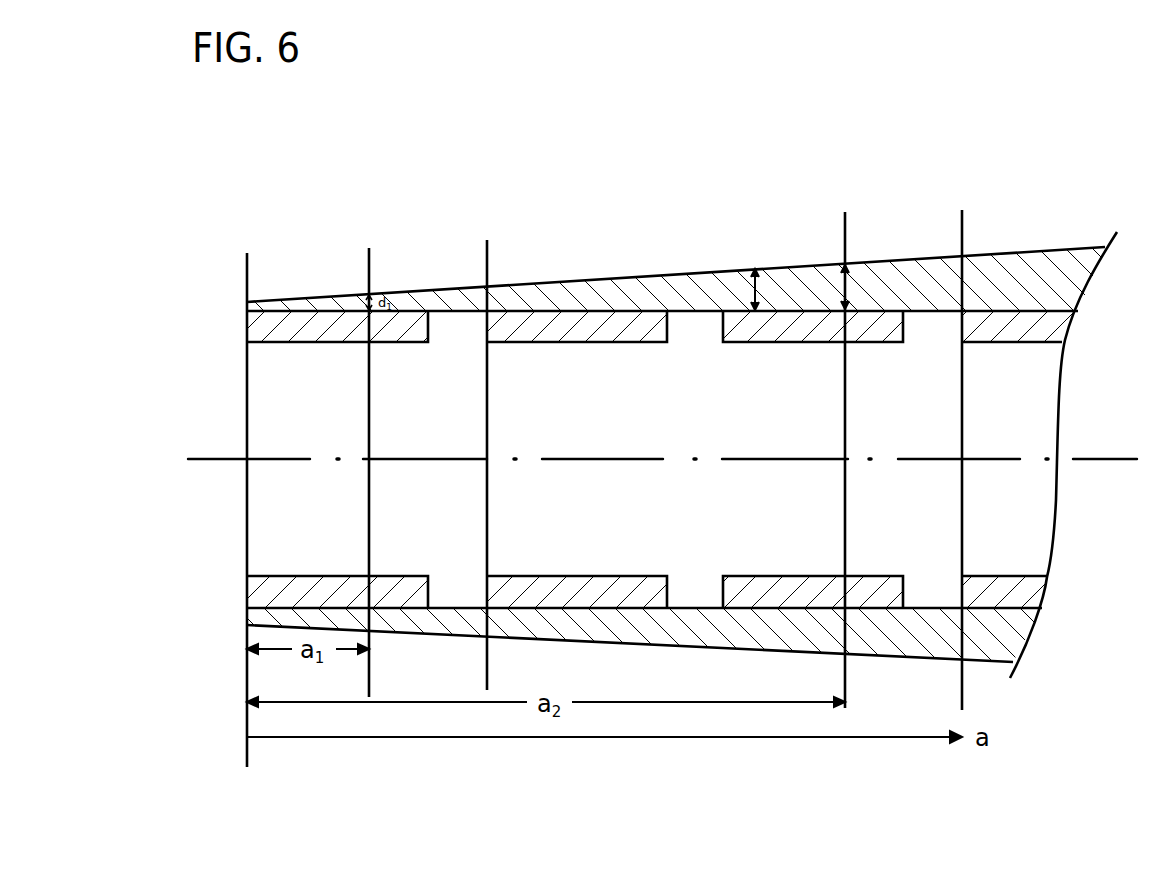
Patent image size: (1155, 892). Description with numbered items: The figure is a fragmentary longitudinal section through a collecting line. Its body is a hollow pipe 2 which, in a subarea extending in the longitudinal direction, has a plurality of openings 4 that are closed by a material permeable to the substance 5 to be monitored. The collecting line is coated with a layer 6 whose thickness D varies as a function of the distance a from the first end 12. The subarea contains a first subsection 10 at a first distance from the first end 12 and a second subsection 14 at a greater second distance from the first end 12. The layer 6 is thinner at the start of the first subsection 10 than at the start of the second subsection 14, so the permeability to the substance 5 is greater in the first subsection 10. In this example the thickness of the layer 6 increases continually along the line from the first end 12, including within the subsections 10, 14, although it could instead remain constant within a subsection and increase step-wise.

The hollow pipe 2 is at (630, 330).
The openings 4 is at (685, 327).
The outer surface 5 is at (787, 252).
The layer 6 is at (580, 290).
The first subsection 10 is at (487, 258).
The first end 12 is at (246, 343).
The second subsection 14 is at (962, 236).